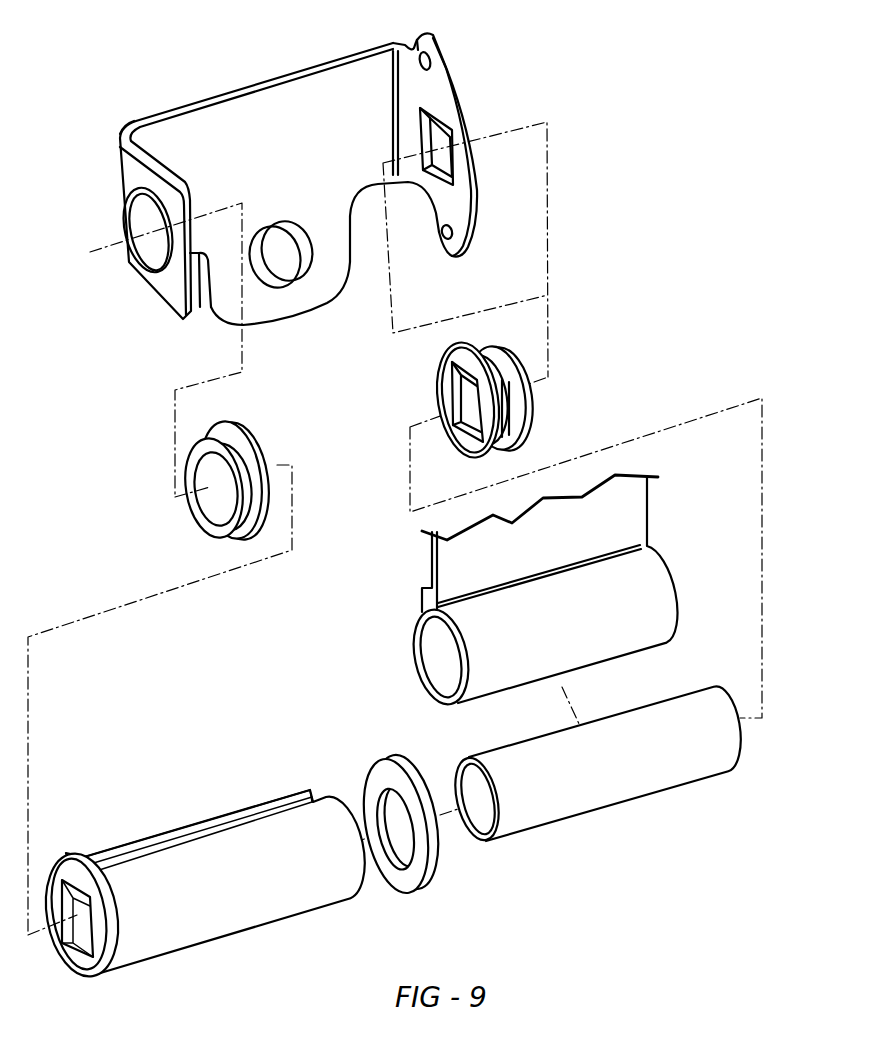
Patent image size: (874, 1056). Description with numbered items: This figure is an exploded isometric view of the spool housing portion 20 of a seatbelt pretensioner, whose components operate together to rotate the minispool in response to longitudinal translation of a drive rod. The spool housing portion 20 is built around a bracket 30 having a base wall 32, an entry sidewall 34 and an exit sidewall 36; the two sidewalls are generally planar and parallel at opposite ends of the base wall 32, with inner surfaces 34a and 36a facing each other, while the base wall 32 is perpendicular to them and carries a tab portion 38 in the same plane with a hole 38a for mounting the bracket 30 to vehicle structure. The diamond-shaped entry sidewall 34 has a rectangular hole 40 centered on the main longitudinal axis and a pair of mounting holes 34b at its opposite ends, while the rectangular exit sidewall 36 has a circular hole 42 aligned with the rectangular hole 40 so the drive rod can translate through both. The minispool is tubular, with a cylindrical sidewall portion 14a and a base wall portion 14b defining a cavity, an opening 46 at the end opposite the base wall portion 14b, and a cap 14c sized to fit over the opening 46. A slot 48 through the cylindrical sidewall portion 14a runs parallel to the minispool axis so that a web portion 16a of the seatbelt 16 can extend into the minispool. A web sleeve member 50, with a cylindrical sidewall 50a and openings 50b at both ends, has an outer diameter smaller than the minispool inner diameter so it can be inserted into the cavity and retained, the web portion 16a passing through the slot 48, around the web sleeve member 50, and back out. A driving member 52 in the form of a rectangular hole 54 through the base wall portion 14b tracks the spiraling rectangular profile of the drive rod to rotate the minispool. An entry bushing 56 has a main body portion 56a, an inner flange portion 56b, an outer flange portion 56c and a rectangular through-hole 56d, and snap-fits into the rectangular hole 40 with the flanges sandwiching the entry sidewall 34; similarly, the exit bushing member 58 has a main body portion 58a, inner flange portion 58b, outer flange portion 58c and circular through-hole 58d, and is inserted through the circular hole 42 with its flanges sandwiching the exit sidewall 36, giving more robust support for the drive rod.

The spool housing portion 20 is at (76, 110).
The bracket 30 is at (285, 70).
The base wall 32 is at (327, 93).
The entry sidewall 34 is at (460, 107).
The inner surface 34a is at (450, 211).
The mounting holes 34b is at (427, 60).
The exit sidewall 36 is at (170, 292).
The inner surface 36a is at (158, 156).
The tab portion 38 is at (303, 296).
The hole 38a is at (277, 260).
The rectangular hole 40 is at (441, 157).
The circular hole 42 is at (158, 244).
The opening 46 is at (355, 865).
The slot 48 is at (183, 840).
The web sleeve member 50 is at (545, 802).
The cylindrical sidewall 50a is at (660, 763).
The openings 50b is at (713, 687).
The entry bushing 56 is at (531, 402).
The main body portion 56a is at (507, 410).
The inner flange portion 56b is at (467, 347).
The outer flange portion 56c is at (512, 370).
The rectangular through-hole 56d is at (467, 385).
The exit bushing member 58 is at (195, 522).
The main body portion 58a is at (242, 452).
The inner flange portion 58b is at (257, 460).
The outer flange portion 58c is at (228, 537).
The circular through-hole 58d is at (210, 497).
The cylindrical sidewall portion 14a is at (208, 903).
The base wall portion 14b is at (90, 970).
The cap 14c is at (440, 863).
The seatbelt 16 is at (398, 615).
The web portion 16a is at (417, 660).
The driving member 52 is at (80, 953).
The rectangular hole 54 is at (62, 933).